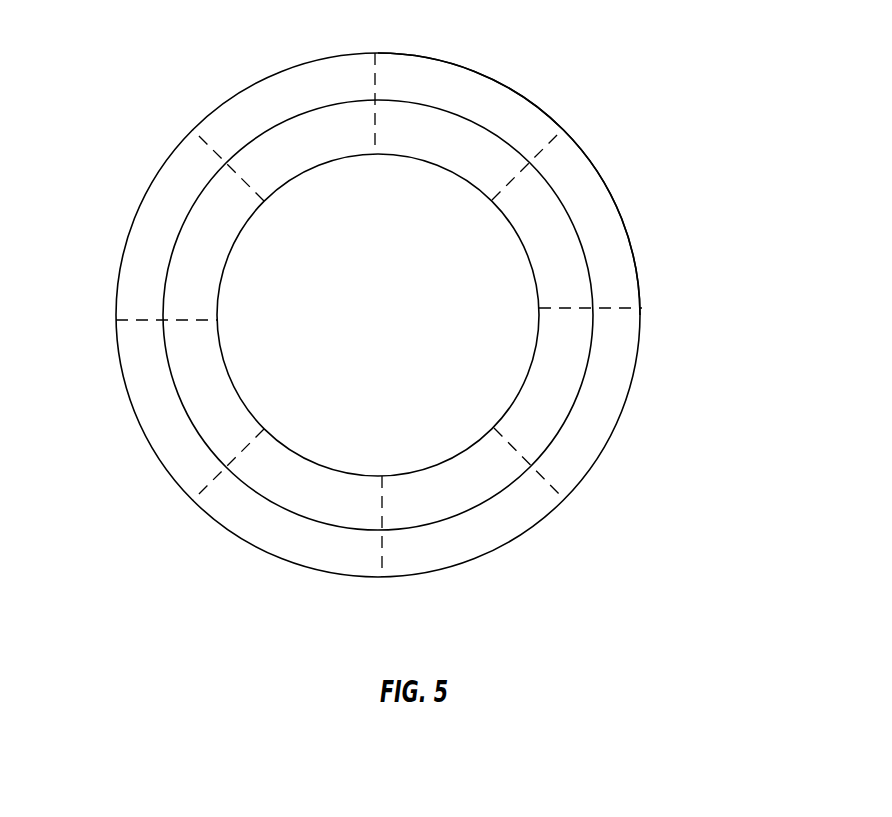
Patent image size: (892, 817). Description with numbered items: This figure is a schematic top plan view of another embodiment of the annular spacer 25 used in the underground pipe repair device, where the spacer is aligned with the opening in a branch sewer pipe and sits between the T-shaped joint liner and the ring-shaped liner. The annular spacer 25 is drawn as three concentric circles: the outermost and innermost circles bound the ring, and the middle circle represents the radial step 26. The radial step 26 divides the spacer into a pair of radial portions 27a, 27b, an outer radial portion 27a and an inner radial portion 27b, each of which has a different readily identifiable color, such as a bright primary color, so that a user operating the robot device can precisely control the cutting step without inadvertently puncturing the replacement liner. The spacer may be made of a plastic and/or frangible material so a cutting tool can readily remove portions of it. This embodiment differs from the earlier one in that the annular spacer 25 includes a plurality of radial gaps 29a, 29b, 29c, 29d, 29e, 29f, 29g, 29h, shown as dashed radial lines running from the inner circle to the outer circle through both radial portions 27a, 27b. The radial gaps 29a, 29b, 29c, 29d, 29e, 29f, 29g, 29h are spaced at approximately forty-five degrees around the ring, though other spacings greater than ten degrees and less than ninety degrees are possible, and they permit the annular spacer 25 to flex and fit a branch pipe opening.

The annular spacer 25 is at (745, 113).
The radial step 26 is at (505, 138).
The radial portion 27a is at (608, 212).
The radial portion 27b is at (560, 257).
The radial gap 29a is at (379, 70).
The radial gap 29b is at (551, 132).
The radial gap 29c is at (610, 309).
The radial gap 29d is at (562, 488).
The radial gap 29e is at (383, 566).
The radial gap 29f is at (215, 478).
The radial gap 29g is at (145, 318).
The radial gap 29h is at (210, 150).